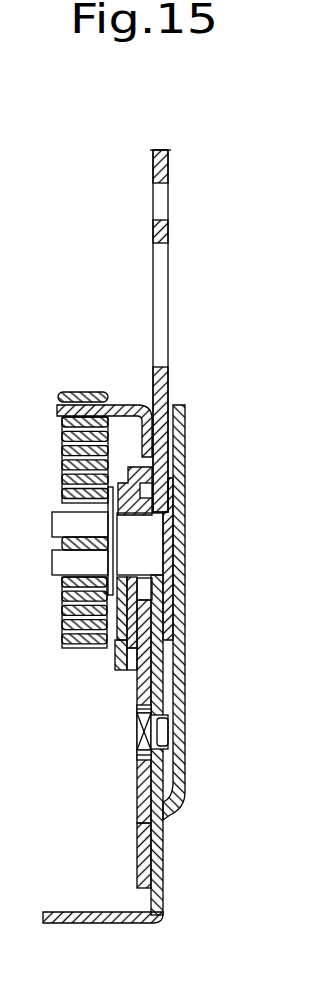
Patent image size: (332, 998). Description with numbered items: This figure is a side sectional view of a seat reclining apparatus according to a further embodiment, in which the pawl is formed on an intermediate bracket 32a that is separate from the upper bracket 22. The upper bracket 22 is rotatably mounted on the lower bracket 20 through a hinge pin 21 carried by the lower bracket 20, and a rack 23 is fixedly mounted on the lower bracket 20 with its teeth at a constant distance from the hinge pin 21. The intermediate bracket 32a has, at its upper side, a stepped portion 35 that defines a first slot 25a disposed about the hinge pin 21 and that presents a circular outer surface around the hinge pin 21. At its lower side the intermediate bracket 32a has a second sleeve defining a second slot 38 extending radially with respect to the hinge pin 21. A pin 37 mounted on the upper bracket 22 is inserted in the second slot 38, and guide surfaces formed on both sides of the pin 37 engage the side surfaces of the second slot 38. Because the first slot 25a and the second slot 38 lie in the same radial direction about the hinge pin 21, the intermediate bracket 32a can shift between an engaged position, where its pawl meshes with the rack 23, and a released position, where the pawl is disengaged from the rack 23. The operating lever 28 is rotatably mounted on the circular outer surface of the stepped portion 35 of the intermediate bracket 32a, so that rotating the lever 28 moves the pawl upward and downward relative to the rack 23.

The lower bracket 20 is at (183, 448).
The hinge pin 21 is at (163, 541).
The upper bracket 22 is at (168, 229).
The rack 23 is at (138, 865).
The first slot 25a is at (135, 582).
The operating lever 28 is at (130, 653).
The intermediate bracket 32a is at (137, 802).
The stepped portion 35 is at (107, 497).
The pin 37 is at (160, 733).
The second slot 38 is at (137, 757).